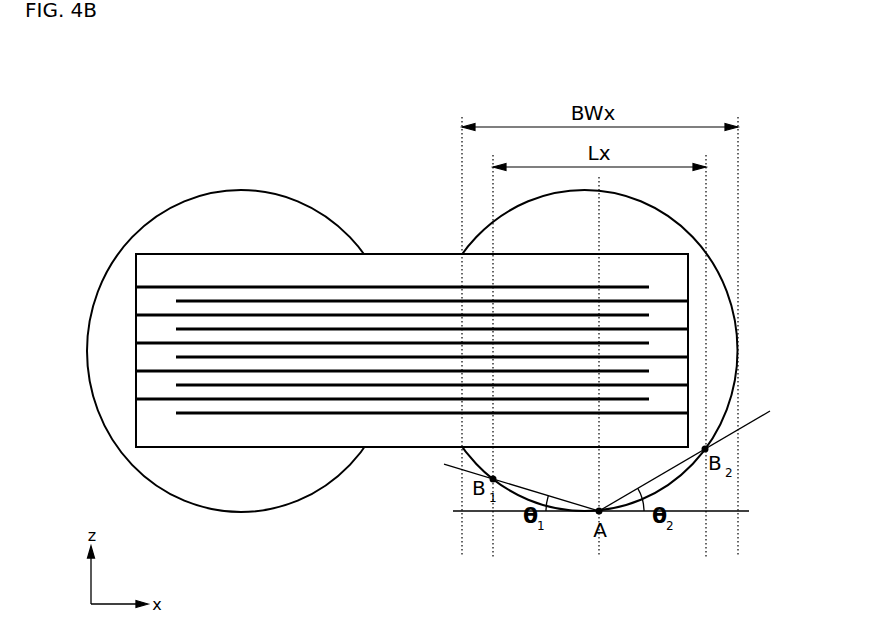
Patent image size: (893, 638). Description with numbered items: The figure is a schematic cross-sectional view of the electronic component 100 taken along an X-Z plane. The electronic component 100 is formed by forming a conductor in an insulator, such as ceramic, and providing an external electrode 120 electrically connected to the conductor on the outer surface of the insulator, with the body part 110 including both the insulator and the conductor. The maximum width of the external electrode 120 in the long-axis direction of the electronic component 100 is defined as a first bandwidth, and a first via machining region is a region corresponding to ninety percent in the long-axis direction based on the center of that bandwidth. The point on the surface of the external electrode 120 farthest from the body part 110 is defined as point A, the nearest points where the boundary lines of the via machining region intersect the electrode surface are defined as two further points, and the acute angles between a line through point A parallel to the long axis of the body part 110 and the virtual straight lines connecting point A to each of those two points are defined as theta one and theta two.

The electronic component 100 is at (59, 101).
The body part 110 is at (402, 265).
The external electrode 120 is at (228, 200).